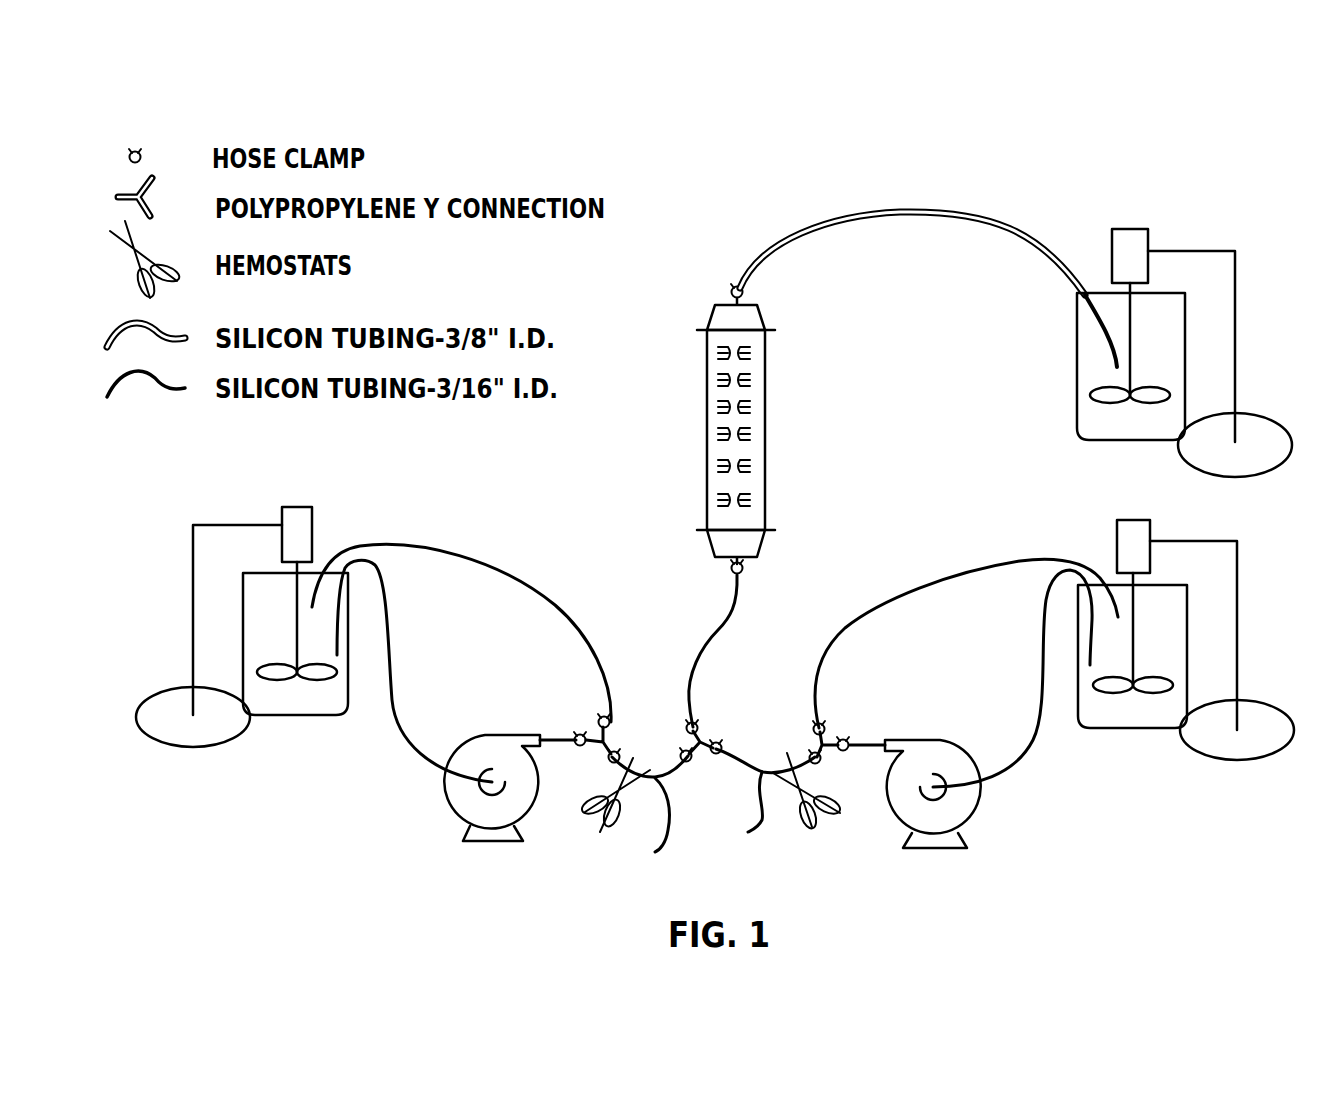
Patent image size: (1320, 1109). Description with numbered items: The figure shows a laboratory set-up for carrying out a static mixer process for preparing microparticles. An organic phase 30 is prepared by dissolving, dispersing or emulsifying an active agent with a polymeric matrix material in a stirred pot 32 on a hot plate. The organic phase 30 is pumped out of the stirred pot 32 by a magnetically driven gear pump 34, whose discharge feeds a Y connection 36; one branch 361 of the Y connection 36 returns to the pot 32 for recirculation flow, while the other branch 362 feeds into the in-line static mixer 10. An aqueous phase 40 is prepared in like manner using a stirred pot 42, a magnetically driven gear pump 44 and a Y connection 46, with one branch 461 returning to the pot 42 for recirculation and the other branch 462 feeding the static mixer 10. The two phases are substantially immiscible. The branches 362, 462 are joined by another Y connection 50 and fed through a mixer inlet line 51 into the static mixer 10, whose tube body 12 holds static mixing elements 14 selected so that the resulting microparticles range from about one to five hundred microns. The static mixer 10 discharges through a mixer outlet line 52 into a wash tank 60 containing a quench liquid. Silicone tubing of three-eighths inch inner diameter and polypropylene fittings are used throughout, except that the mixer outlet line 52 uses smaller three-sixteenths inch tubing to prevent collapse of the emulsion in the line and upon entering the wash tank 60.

The static mixer 10 is at (756, 429).
The static mixer tube 12 is at (767, 497).
The static mixing elements 14 is at (768, 428).
The organic phase 30 is at (1113, 682).
The stirred pot 32 is at (1167, 592).
The magnetically driven gear pump 34 is at (962, 818).
The Y connection 36 is at (845, 722).
The branch 361 is at (918, 598).
The branch 362 is at (773, 796).
The aqueous phase 40 is at (314, 669).
The stirred pot 42 is at (258, 582).
The magnetically driven gear pump 44 is at (458, 805).
The Y connection 46 is at (593, 720).
The branch 461 is at (520, 592).
The branch 462 is at (633, 815).
The Y connection 50 is at (712, 722).
The mixer inlet line 51 is at (726, 623).
The mixer outlet line 52 is at (812, 222).
The wash tank 60 is at (1166, 302).